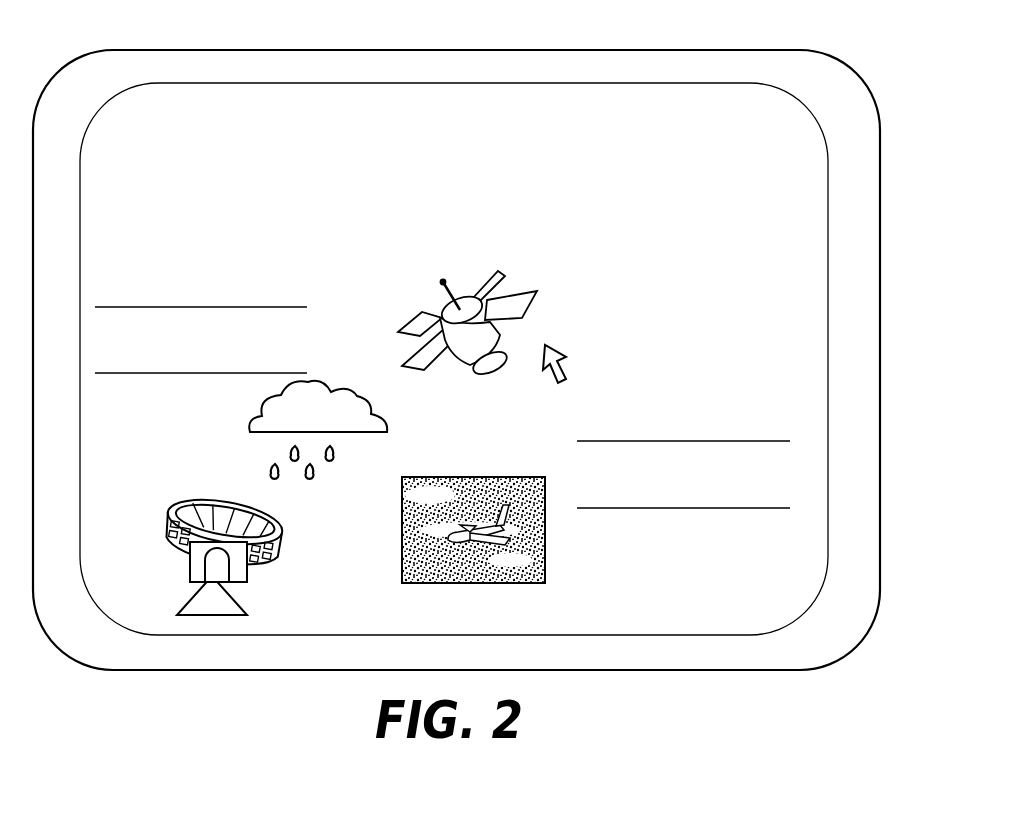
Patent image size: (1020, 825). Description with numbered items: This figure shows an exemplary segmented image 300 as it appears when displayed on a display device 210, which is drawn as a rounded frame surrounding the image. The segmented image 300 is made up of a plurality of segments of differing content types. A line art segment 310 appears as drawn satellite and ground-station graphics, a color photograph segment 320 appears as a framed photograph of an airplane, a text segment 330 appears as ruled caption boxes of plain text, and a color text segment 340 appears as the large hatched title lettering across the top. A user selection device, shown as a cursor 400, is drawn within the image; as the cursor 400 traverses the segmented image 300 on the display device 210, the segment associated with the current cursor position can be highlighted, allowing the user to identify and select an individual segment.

The display device 210 is at (447, 50).
The segmented image 300 is at (735, 100).
The line art segment 310 is at (556, 283).
The color photograph segment 320 is at (466, 462).
The text segment 330 is at (220, 294).
The color text segment 340 is at (705, 254).
The cursor 400 is at (560, 350).